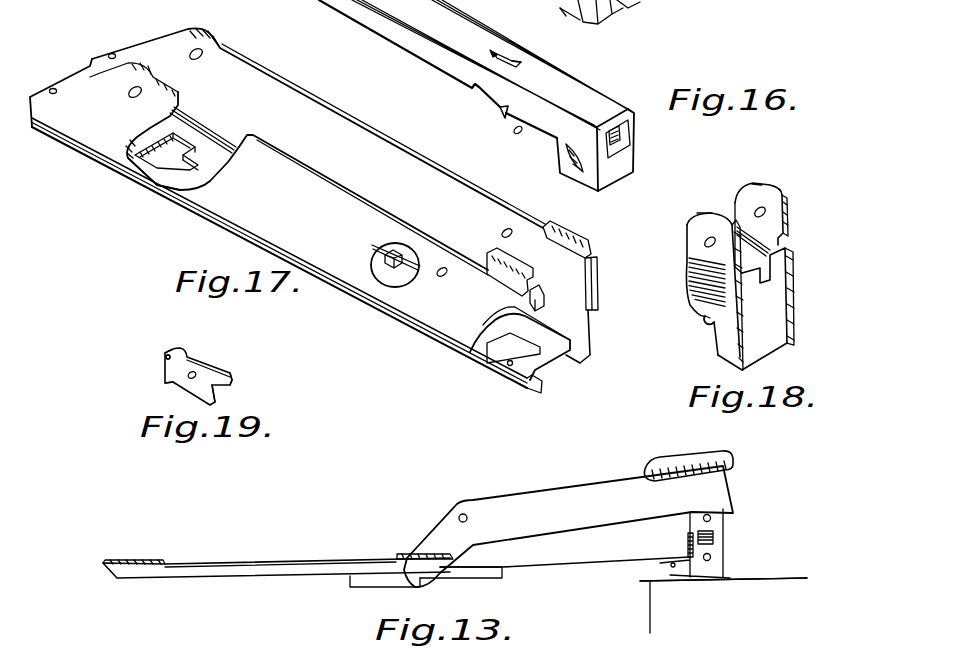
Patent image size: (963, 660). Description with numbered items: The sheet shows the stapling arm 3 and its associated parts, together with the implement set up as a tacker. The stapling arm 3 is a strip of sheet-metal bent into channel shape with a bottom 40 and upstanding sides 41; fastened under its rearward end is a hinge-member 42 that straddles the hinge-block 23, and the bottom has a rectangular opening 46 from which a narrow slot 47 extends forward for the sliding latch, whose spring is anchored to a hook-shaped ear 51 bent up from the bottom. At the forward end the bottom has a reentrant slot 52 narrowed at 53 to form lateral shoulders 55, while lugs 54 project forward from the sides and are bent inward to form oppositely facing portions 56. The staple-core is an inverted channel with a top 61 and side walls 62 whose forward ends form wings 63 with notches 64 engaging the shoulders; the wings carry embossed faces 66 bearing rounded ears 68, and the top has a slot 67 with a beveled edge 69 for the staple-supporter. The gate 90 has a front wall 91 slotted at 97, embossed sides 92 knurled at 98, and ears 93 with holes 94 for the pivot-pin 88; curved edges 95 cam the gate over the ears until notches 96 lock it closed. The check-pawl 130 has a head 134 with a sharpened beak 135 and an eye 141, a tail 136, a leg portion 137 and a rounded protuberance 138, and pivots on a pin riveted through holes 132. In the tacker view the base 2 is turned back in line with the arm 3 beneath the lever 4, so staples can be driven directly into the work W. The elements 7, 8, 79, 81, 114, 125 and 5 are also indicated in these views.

In FIG. 16, the top 61 is at (571, 86).
In FIG. 16, the side walls 62 is at (398, 40).
In FIG. 16, the slot 67 is at (497, 55).
In FIG. 16, the beveled edge 69 is at (514, 64).
In FIG. 16, the notches 64 is at (497, 113).
In FIG. 16, the wings 63 is at (528, 143).
In FIG. 16, the projecting faces 66 is at (590, 179).
In FIG. 16, the ears 68 is at (622, 137).
In FIG. 13, the ears 68 is at (711, 557).
In FIG. 16, the holes 132 is at (562, 9).
In FIG. 16, the member 81 is at (618, 9).
In FIG. 17, the stapling arm 3 is at (406, 326).
In FIG. 13, the stapling arm 3 is at (594, 562).
In FIG. 17, the rivet 114 is at (52, 89).
In FIG. 17, the sides 41 is at (289, 169).
In FIG. 17, the bottom 40 is at (175, 181).
In FIG. 17, the rectangular opening 46 is at (188, 141).
In FIG. 17, the slot 47 is at (207, 170).
In FIG. 17, the hook-shaped ear 51 is at (392, 262).
In FIG. 17, the narrowed portion 53 is at (492, 338).
In FIG. 17, the lugs 54 is at (544, 300).
In FIG. 17, the oppositely facing portions 56 is at (585, 277).
In FIG. 17, the reentrant opening 52 is at (553, 368).
In FIG. 17, the lateral shoulders 55 is at (514, 363).
In FIG. 19, the check-pawl 130 is at (208, 363).
In FIG. 19, the head 134 is at (167, 352).
In FIG. 19, the eye 141 is at (176, 351).
In FIG. 19, the rounded protuberance 138 is at (233, 372).
In FIG. 19, the tail 136 is at (234, 380).
In FIG. 19, the leg portion 137 is at (217, 400).
In FIG. 19, the beak 135 is at (167, 383).
In FIG. 18, the gate 90 is at (762, 346).
In FIG. 18, the sides 92 is at (687, 298).
In FIG. 18, the front wall 91 is at (764, 274).
In FIG. 18, the slot 97 is at (765, 280).
In FIG. 18, the ears 93 is at (690, 278).
In FIG. 18, the holes 94 is at (764, 208).
In FIG. 18, the curved edges 95 is at (703, 318).
In FIG. 18, the notches 96 is at (713, 326).
In FIG. 13, the base 2 is at (260, 573).
In FIG. 13, the anvil plate 7 is at (148, 559).
In FIG. 13, the plate 8 is at (440, 554).
In FIG. 13, the hinge-block 23 is at (376, 583).
In FIG. 13, the hinge-member 42 is at (504, 578).
In FIG. 13, the lever 4 is at (573, 487).
In FIG. 13, the hole 79 is at (468, 516).
In FIG. 13, the handle cap 125 is at (682, 458).
In FIG. 13, the pivot-pin 88 is at (712, 518).
In FIG. 13, the knurled portion 98 is at (714, 538).
In FIG. 13, the spring 5 is at (688, 545).
In FIG. 13, the work surface W is at (688, 581).